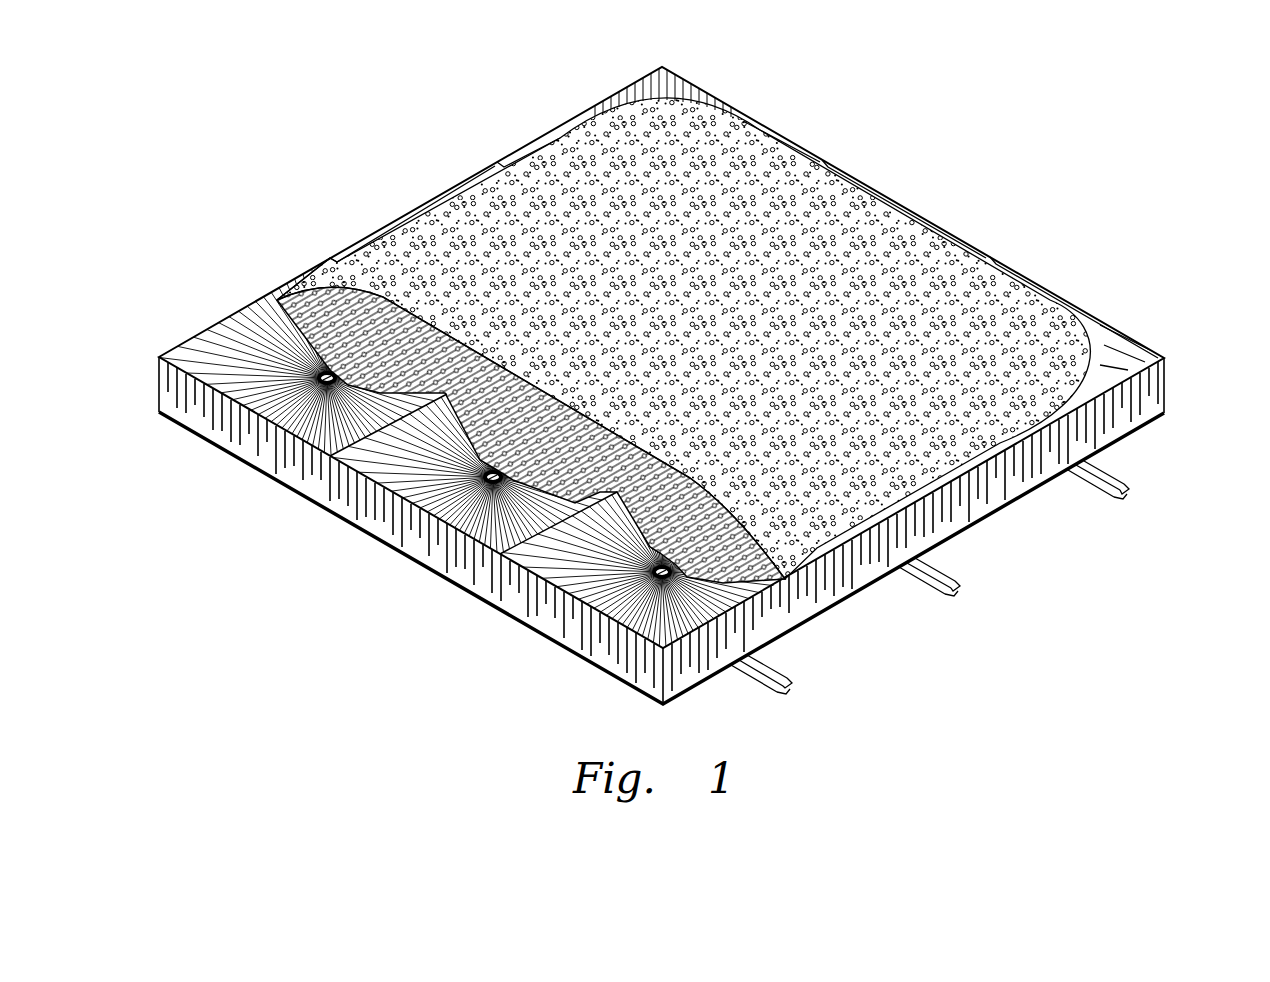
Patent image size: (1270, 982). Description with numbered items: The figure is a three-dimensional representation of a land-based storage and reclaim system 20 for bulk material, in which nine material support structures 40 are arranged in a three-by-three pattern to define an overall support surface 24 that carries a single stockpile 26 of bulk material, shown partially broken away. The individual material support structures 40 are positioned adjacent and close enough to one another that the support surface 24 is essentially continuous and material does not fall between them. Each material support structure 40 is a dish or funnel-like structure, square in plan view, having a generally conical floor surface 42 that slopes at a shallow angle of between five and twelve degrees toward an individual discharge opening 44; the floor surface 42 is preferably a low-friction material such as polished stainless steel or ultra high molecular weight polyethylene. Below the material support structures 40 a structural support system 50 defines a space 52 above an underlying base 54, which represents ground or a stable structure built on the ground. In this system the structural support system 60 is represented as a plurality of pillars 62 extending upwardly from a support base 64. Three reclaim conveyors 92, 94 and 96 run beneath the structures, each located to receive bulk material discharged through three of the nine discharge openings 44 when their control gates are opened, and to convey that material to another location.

The storage and reclaim system 20 is at (990, 150).
The overall support surface 24 is at (262, 330).
The stockpile 26 is at (700, 233).
The material support structure 40 is at (440, 497).
The conical floor surface 42 is at (223, 360).
The discharge opening 44 is at (322, 422).
The structural support system 50 is at (866, 636).
The space 52 is at (978, 510).
The base 54 is at (1133, 432).
The structural support system 60 is at (956, 616).
The pillar 62 is at (410, 534).
The support base 64 is at (1120, 443).
The reclaim conveyor 92 is at (793, 692).
The reclaim conveyor 94 is at (960, 597).
The reclaim conveyor 96 is at (1128, 498).